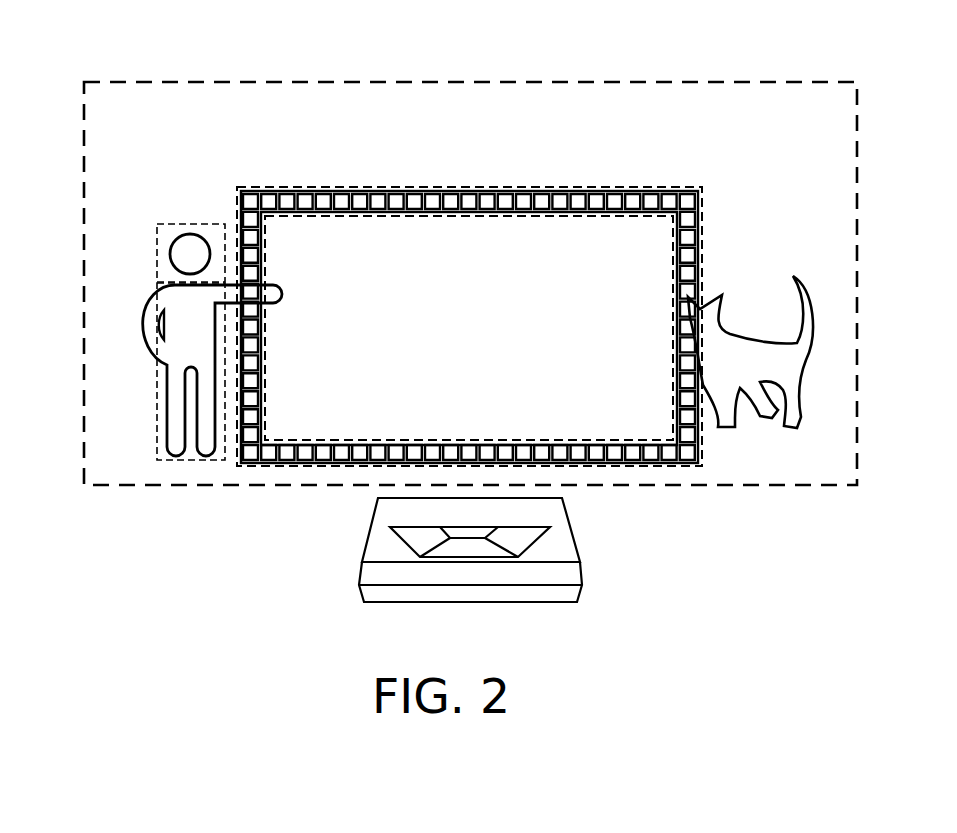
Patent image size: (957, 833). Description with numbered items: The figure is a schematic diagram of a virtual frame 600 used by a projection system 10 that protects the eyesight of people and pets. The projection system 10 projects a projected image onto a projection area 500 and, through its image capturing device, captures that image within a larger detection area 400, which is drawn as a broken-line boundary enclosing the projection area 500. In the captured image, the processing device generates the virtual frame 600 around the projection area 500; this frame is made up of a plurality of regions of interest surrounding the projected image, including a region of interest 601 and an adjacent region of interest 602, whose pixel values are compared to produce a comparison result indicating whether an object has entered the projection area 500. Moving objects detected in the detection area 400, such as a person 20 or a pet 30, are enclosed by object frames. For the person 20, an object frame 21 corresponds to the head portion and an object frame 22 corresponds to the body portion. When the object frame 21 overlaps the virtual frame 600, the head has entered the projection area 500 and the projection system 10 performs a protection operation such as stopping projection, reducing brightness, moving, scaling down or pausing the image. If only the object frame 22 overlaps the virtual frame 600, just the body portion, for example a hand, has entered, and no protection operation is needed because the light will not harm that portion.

The detection area 400 is at (790, 82).
The virtual frame 600 is at (491, 286).
The region of interest 601 is at (259, 317).
The region of interest 602 is at (263, 341).
The projection area 500 is at (510, 350).
The person 20 is at (188, 338).
The object frame 21 is at (157, 233).
The object frame 22 is at (156, 405).
The pet 30 is at (798, 378).
The projection system 10 is at (560, 535).